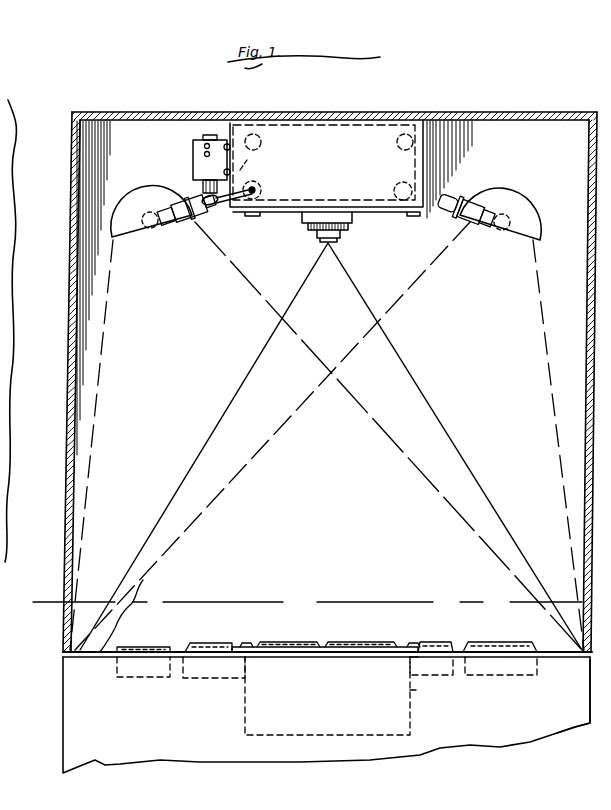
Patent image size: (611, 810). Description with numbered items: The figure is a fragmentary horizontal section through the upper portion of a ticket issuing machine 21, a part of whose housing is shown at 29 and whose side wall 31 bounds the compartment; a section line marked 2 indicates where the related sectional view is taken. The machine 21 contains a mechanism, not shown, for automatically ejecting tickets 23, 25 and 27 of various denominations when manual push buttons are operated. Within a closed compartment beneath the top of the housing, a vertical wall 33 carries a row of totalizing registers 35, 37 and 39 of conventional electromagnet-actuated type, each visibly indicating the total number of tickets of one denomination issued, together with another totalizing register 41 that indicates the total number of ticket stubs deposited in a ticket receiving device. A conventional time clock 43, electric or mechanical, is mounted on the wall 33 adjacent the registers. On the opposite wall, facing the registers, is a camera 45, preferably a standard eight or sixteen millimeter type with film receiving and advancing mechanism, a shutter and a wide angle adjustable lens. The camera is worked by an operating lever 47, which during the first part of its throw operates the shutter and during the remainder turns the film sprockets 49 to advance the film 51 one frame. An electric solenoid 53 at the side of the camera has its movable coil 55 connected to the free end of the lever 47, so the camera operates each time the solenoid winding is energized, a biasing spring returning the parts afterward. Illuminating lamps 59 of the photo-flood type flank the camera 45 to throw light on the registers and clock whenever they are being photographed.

The section line 2- 2 is at (47, 583).
The ticket issuing machine 21 is at (60, 682).
The ticket 23 is at (141, 646).
The ticket 25 is at (327, 704).
The ticket 27 is at (437, 642).
The housing 29 is at (583, 690).
The side wall 31 is at (589, 408).
The vertical wall 33 is at (127, 614).
The totalizing register 35 is at (201, 642).
The totalizing register 37 is at (371, 642).
The totalizing register 39 is at (497, 644).
The totalizing register 41 is at (285, 645).
The time clock 43 is at (412, 714).
The camera 45 is at (425, 171).
The operating lever 47 is at (218, 212).
The film sprockets 49 is at (258, 187).
The film 51 is at (247, 160).
The electric solenoid 53 is at (193, 157).
The movable coil 55 is at (200, 192).
The illuminating lamp 59 is at (146, 232).